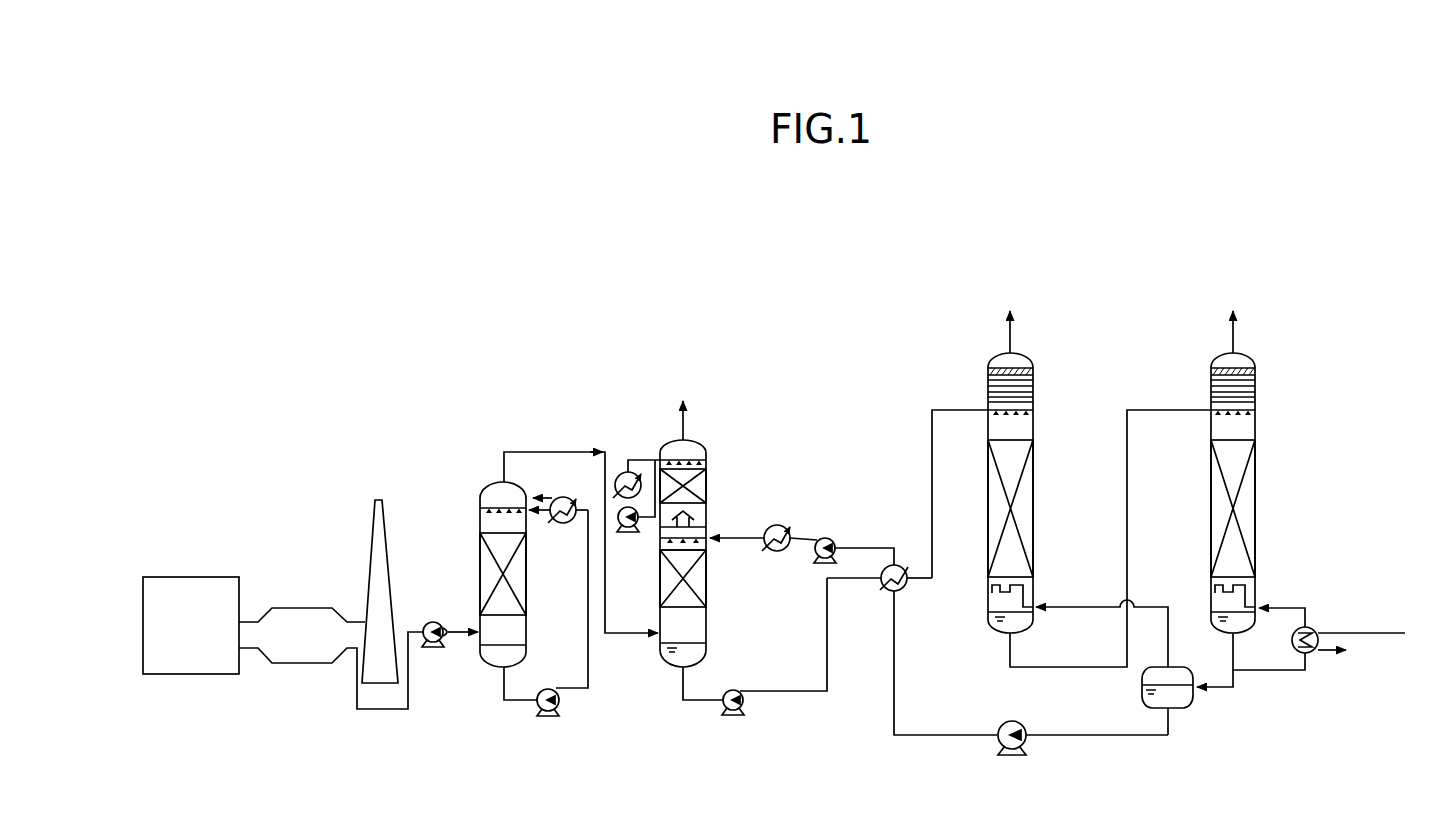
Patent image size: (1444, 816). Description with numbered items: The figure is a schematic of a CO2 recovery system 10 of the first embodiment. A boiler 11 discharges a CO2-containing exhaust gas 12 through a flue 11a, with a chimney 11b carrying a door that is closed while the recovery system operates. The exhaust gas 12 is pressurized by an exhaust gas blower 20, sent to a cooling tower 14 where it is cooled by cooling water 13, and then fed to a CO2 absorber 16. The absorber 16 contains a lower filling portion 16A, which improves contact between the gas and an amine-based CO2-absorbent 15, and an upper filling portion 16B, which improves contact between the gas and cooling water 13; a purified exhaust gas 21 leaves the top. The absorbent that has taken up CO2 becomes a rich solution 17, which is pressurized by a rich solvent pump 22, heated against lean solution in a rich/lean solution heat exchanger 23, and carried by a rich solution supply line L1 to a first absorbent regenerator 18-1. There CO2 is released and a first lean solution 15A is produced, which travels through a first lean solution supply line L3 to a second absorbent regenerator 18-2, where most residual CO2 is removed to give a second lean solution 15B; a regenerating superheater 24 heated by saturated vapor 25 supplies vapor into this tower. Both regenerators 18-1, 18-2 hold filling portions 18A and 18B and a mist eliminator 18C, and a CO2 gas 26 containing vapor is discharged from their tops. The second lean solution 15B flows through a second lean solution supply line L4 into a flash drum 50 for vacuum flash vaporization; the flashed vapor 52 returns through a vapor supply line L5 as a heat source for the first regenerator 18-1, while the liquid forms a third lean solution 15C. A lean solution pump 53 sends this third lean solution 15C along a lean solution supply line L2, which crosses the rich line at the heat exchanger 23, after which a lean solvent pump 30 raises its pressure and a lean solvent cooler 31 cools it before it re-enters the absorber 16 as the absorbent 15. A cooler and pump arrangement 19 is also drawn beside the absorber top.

The CO2 recovery system 10 is at (653, 282).
The boiler 11 is at (223, 577).
The flue 11a is at (285, 663).
The chimney 11b is at (373, 532).
The CO2-containing exhaust gas 12 is at (370, 722).
The cooling water 13 is at (543, 495).
The cooling tower 14 is at (482, 488).
The CO2-absorbent 15 is at (725, 527).
The first lean solution 15A is at (1079, 677).
The second lean solution 15B is at (1211, 700).
The third lean solution 15C is at (928, 752).
The CO2 absorber 16 is at (714, 521).
The filling portion 16A is at (698, 584).
The filling portion 16B is at (698, 488).
The rich solution 17 is at (666, 660).
The first absorbent regenerator 18-1 is at (1130, 469).
The second absorbent regenerator 18-2 is at (1220, 352).
The filling portion 18A is at (1028, 512).
The filling portion 18B is at (1034, 393).
The mist eliminator 18C is at (1034, 372).
The condensate circulation pump and cooler 19 is at (636, 460).
The exhaust gas blower 20 is at (437, 620).
The purified exhaust gas 21 is at (681, 418).
The rich solvent pump 22 is at (736, 689).
The rich/lean solution heat exchanger 23 is at (888, 597).
The regenerating superheater 24 is at (1312, 628).
The saturated vapor 25 is at (1375, 635).
The CO2 gas 26 is at (1012, 335).
The lean solvent pump 30 is at (834, 538).
The lean solvent cooler 31 is at (786, 555).
The flash drum 50 is at (1178, 709).
The vapor 52 is at (1067, 595).
The lean solution pump 53 is at (1011, 721).
The rich solution supply line L1 is at (933, 508).
The lean solution supply line L2 is at (896, 657).
The first lean solution supply line L3 is at (1088, 667).
The second lean solution supply line L4 is at (1237, 678).
The vapor supply line L5 is at (1155, 607).